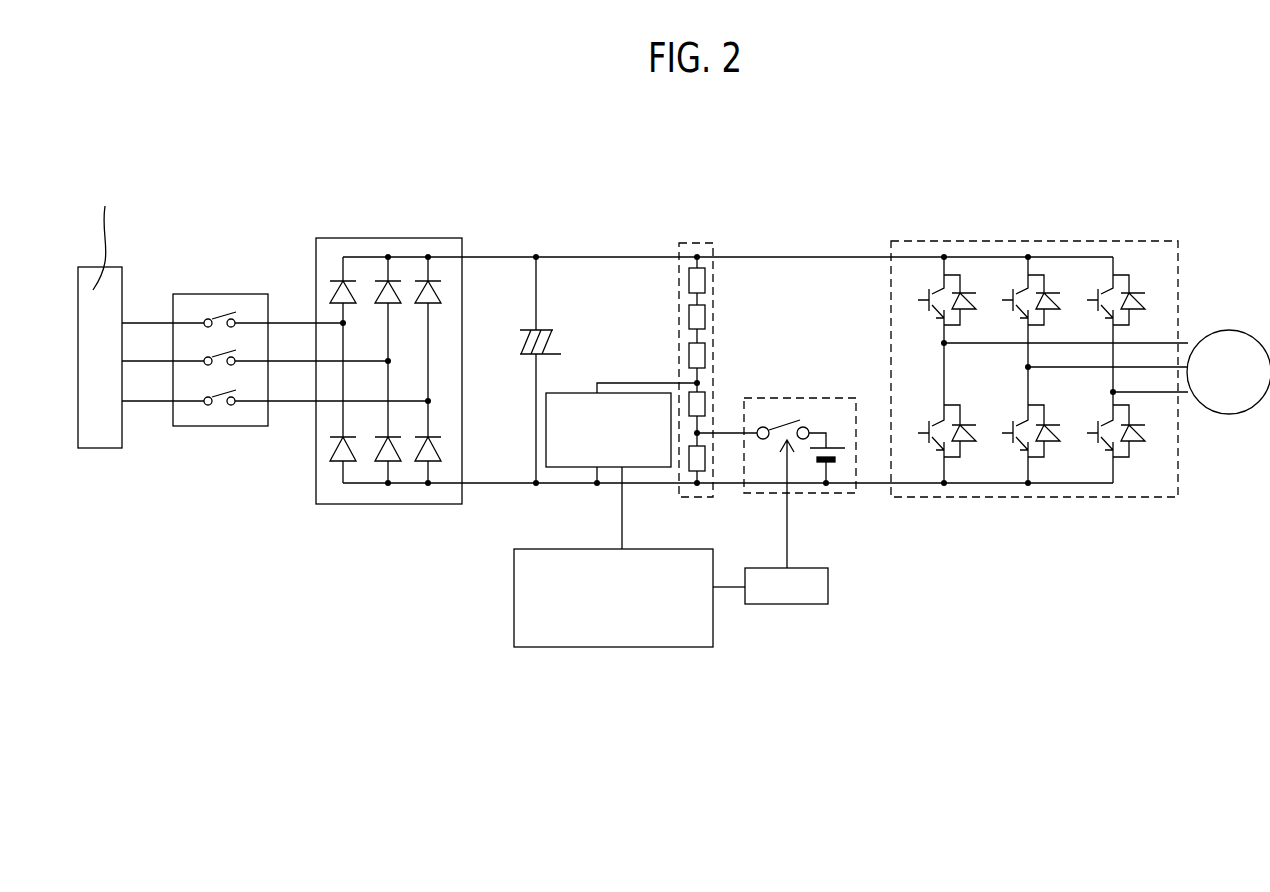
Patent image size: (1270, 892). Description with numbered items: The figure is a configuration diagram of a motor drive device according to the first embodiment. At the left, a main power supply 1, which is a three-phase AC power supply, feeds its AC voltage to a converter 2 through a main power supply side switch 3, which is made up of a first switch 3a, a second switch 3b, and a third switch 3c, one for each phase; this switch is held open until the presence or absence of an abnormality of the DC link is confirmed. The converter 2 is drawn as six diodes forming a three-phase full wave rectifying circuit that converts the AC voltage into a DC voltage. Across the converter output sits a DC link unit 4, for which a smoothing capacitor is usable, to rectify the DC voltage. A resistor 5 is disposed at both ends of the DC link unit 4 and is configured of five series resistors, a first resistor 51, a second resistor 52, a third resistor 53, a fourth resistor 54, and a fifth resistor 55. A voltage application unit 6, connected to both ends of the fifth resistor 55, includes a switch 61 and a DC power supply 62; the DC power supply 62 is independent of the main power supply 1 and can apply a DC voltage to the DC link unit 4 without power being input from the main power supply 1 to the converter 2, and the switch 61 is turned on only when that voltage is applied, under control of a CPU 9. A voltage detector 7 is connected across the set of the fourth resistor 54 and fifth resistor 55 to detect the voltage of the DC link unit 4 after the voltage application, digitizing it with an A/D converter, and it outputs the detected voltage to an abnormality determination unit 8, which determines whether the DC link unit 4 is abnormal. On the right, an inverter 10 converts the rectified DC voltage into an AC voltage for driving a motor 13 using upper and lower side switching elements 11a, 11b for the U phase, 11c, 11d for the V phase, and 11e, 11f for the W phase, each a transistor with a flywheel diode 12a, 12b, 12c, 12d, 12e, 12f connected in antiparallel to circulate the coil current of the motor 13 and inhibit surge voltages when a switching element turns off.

The main power supply 1 is at (100, 450).
The converter 2 is at (350, 505).
The main power supply side switch 3 is at (238, 294).
The first switch 3a is at (212, 316).
The second switch 3b is at (212, 352).
The third switch 3c is at (222, 406).
The DC link unit 4 is at (545, 328).
The resistor 5 is at (692, 365).
The first resistor 51 is at (689, 284).
The second resistor 52 is at (689, 319).
The third resistor 53 is at (689, 356).
The fourth resistor 54 is at (703, 384).
The fifth resistor 55 is at (686, 484).
The voltage application unit 6 is at (787, 448).
The switch 61 is at (798, 416).
The DC power supply 62 is at (835, 463).
The voltage detector 7 is at (591, 393).
The abnormality determination unit 8 is at (625, 648).
The CPU 9 is at (828, 587).
The inverter 10 is at (1133, 241).
The upper side switching element of U phase 11a is at (917, 298).
The lower side switching element of U phase 11b is at (920, 437).
The upper side switching element of V phase 11c is at (1001, 298).
The lower side switching element of V phase 11d is at (1004, 437).
The upper side switching element of W phase 11e is at (1086, 298).
The lower side switching element of W phase 11f is at (1089, 437).
The flywheel diode 12a is at (968, 309).
The flywheel diode 12b is at (968, 441).
The flywheel diode 12c is at (1052, 309).
The flywheel diode 12d is at (1052, 441).
The flywheel diode 12e is at (1137, 309).
The flywheel diode 12f is at (1137, 441).
The motor 13 is at (1237, 330).